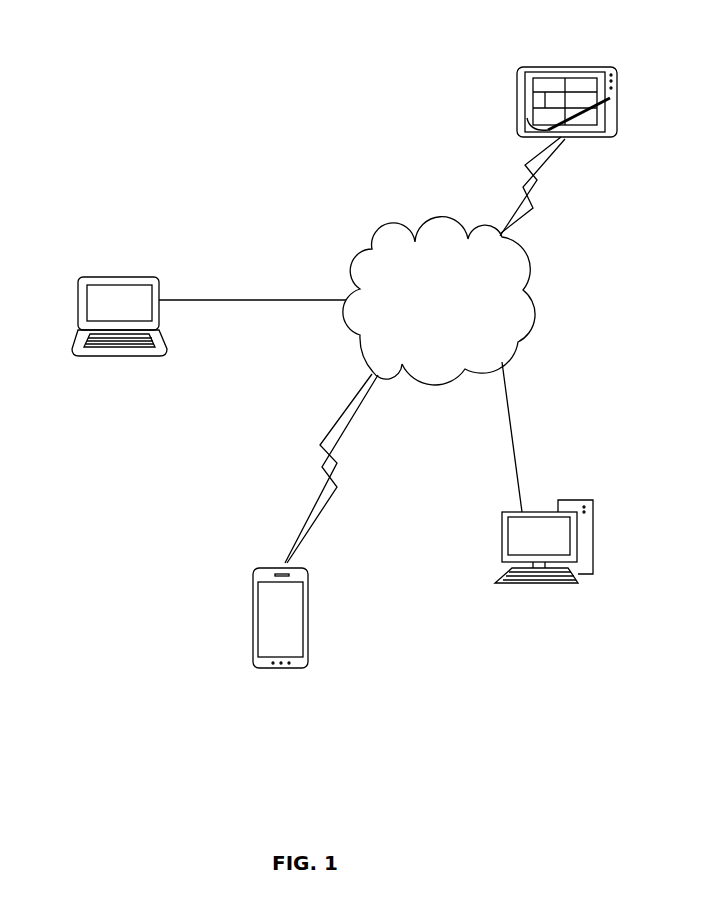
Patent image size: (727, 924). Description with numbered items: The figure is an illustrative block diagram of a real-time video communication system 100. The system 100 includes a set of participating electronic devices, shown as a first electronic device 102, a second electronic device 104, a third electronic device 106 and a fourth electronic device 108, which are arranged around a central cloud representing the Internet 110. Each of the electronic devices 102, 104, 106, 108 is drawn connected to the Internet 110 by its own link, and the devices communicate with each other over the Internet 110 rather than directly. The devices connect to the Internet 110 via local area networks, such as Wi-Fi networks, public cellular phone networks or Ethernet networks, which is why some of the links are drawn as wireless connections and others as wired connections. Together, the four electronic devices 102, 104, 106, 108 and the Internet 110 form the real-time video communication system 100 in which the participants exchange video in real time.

The real-time video communication system 100 is at (135, 58).
The electronic device 102 is at (80, 298).
The electronic device 104 is at (260, 607).
The electronic device 106 is at (590, 574).
The electronic device 108 is at (517, 78).
The Internet 110 is at (352, 260).